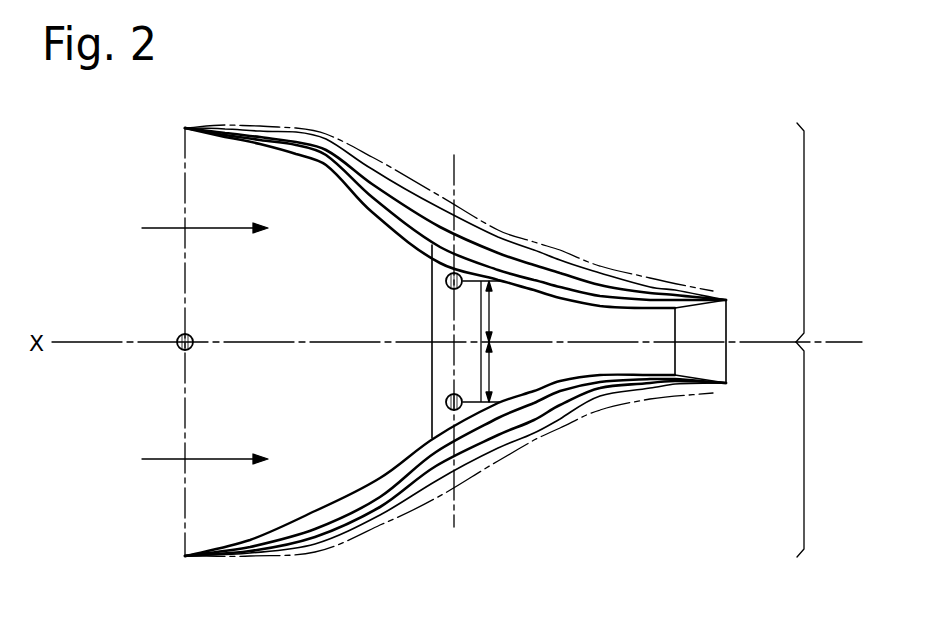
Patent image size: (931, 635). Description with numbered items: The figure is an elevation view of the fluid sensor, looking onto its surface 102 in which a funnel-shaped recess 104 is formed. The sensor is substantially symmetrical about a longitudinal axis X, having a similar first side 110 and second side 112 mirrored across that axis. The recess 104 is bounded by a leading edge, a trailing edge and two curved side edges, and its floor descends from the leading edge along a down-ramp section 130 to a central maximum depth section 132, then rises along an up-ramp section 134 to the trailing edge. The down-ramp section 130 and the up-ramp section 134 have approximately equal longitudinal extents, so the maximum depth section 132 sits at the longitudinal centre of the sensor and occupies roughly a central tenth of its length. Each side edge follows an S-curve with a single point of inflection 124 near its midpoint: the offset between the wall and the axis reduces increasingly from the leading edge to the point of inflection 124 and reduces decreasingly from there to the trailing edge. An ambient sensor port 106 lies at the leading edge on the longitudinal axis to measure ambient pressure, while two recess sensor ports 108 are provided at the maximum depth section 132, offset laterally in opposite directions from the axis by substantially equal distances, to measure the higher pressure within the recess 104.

The surface 102 is at (632, 152).
The recess 104 is at (331, 122).
The ambient sensor port 106 is at (177, 347).
The recess sensor ports 108 is at (446, 282).
The first side 110 is at (804, 226).
The lower half 112 is at (804, 446).
The point of inflection 124 is at (438, 436).
The down-ramp section 130 is at (230, 180).
The maximum depth section 132 is at (438, 265).
The up-ramp section 134 is at (604, 323).